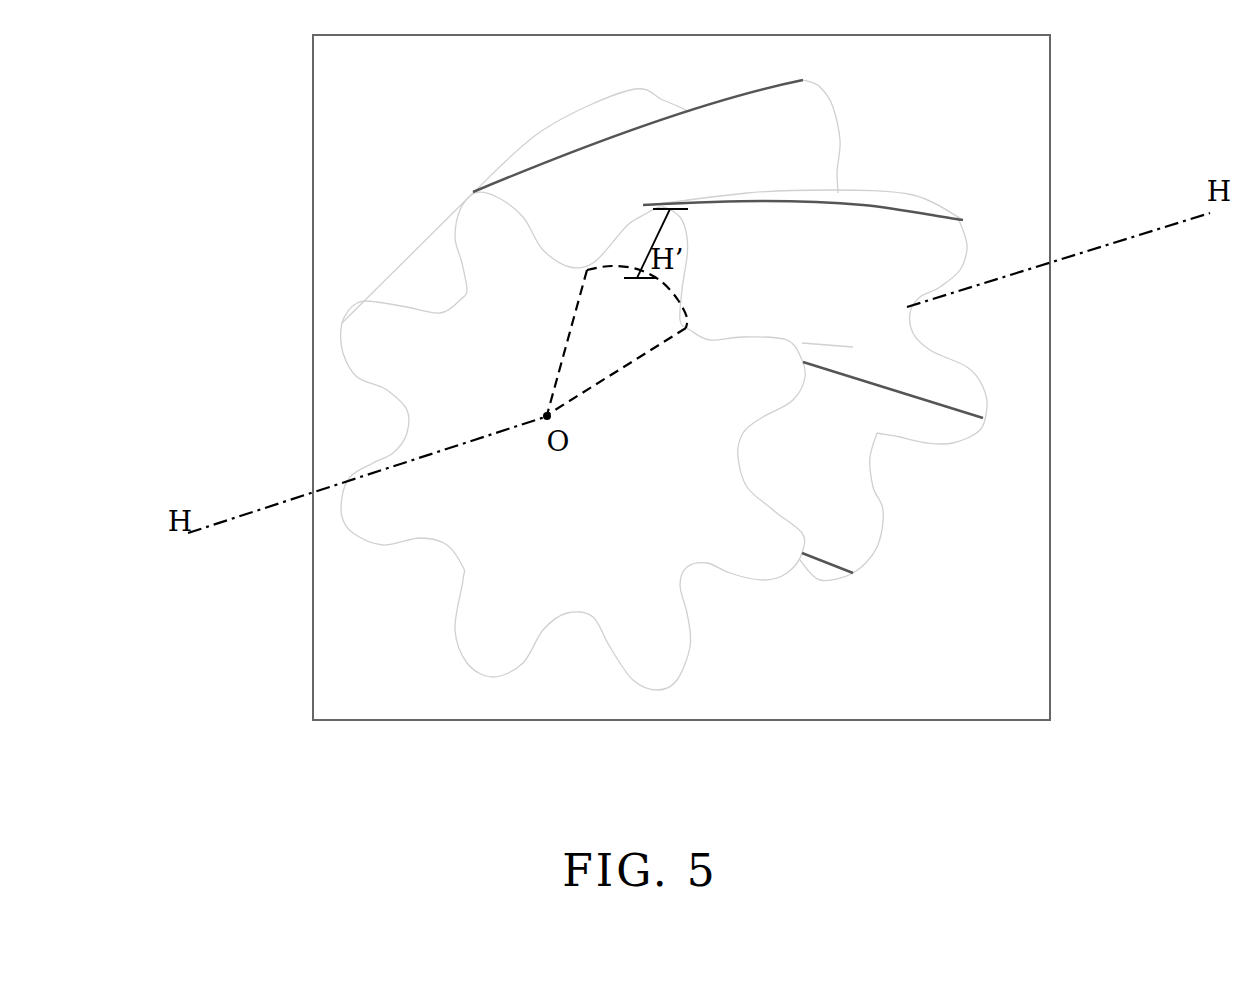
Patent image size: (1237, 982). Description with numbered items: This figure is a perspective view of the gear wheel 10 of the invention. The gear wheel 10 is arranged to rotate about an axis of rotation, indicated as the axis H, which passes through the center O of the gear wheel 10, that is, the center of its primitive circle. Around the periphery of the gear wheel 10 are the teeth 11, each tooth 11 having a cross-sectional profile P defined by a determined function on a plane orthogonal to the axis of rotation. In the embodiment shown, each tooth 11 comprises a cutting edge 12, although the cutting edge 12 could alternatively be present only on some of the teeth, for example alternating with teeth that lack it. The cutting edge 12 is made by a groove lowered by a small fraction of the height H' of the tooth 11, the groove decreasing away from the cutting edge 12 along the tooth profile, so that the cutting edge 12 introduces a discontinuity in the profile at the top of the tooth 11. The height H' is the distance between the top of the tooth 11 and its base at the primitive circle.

The gear wheel 10 is at (322, 203).
The tooth 11 is at (776, 368).
The cutting edge 12 is at (880, 385).